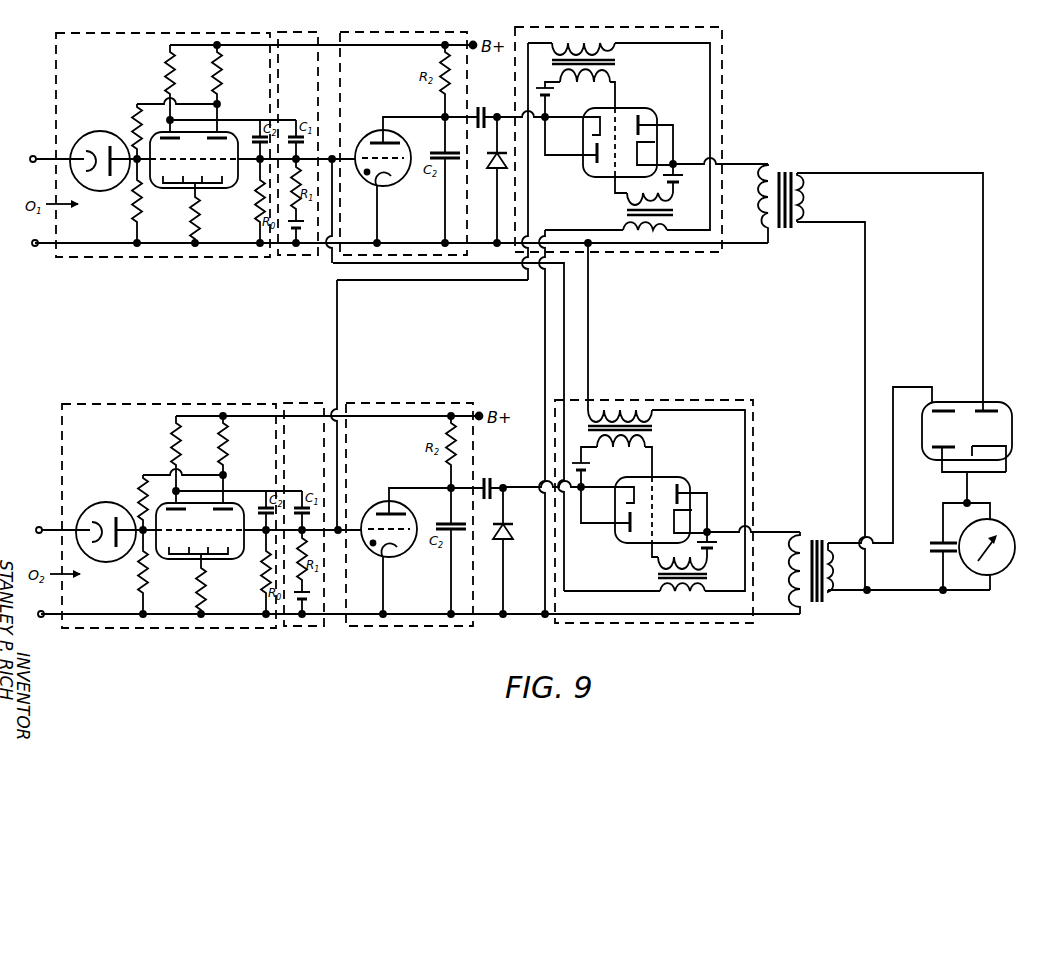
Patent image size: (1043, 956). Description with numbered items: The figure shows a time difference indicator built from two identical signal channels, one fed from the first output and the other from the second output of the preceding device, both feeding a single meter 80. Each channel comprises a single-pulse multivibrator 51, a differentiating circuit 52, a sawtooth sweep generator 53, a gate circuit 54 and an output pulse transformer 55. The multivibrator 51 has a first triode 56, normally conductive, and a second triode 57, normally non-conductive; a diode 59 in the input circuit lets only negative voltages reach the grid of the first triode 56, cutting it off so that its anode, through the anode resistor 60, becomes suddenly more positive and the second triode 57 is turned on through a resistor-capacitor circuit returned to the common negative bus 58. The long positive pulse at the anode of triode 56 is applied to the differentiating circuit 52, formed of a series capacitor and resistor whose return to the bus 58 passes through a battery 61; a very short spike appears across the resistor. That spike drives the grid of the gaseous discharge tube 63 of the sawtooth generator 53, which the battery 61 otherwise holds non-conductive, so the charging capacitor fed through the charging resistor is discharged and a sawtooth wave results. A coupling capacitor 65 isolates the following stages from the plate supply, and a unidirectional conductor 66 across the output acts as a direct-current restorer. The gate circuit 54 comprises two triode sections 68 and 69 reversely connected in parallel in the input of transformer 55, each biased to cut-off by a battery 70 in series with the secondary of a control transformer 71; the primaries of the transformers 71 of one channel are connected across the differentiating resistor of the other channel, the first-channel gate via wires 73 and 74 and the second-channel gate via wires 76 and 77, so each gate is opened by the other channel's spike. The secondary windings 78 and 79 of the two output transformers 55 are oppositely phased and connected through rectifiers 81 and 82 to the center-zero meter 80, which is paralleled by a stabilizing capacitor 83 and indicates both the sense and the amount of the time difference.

The single-pulse multivibrator 51 is at (158, 404).
The differentiating circuit 52 is at (318, 402).
The sawtooth sweep generator 53 is at (425, 402).
The gate circuit 54 is at (700, 399).
The output pulse transformer 55 is at (785, 168).
The first triode 56 is at (172, 184).
The second triode 57 is at (216, 184).
The common negative bus 58 is at (50, 248).
The diode 59 is at (104, 191).
The anode resistor 60 is at (163, 67).
The battery 61 is at (291, 223).
The gaseous discharge tube 63 is at (371, 132).
The coupling capacitor 65 is at (481, 130).
The unidirectional conductor 66 is at (495, 171).
The triode section 68 is at (628, 114).
The triode section 69 is at (603, 171).
The battery 70 is at (536, 88).
The control transformer 71 is at (618, 62).
The wire 73 is at (553, 234).
The wire 74 is at (334, 343).
The wire 76 is at (340, 264).
The wire 77 is at (590, 327).
The secondary winding 78 is at (805, 212).
The secondary winding 79 is at (838, 572).
The meter 80 is at (998, 572).
The rectifier 81 is at (1000, 422).
The rectifier 82 is at (923, 439).
The stabilizing capacitor 83 is at (932, 549).